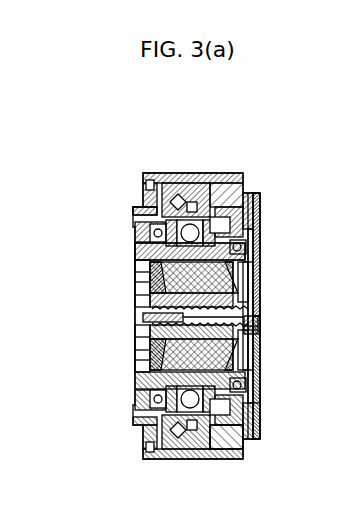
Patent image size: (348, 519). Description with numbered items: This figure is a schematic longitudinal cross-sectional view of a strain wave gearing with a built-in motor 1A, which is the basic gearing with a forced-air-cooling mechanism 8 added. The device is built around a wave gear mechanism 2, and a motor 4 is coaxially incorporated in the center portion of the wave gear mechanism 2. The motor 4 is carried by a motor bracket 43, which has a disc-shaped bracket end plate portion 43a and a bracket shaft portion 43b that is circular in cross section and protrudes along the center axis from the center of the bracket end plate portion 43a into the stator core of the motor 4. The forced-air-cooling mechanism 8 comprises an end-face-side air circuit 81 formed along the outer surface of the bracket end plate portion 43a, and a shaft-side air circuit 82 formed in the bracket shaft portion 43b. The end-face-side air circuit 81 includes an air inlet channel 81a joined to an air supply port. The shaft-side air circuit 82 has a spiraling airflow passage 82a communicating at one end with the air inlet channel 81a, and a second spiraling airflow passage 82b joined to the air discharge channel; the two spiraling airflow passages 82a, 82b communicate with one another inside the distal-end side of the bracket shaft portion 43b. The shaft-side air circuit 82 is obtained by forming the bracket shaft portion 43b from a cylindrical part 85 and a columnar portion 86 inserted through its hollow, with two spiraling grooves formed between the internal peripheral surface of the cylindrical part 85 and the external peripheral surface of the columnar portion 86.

The strain wave gearing with a built-in motor 1A is at (118, 155).
The wave gear mechanism 2 is at (124, 231).
The motor 4 is at (122, 290).
The forced-air-cooling mechanism 8 is at (270, 236).
The end-face-side air circuit 81 is at (262, 266).
The air inlet channel 81a is at (300, 429).
The motor bracket 43 is at (262, 290).
The bracket end plate portion 43a is at (248, 430).
The bracket shaft portion 43b is at (33, 360).
The shaft-side air circuit 82 is at (257, 323).
The spiraling airflow passage 82a is at (253, 330).
The spiraling airflow passage 82b is at (253, 328).
The cylindrical part 85 is at (197, 317).
The columnar portion 86 is at (175, 338).